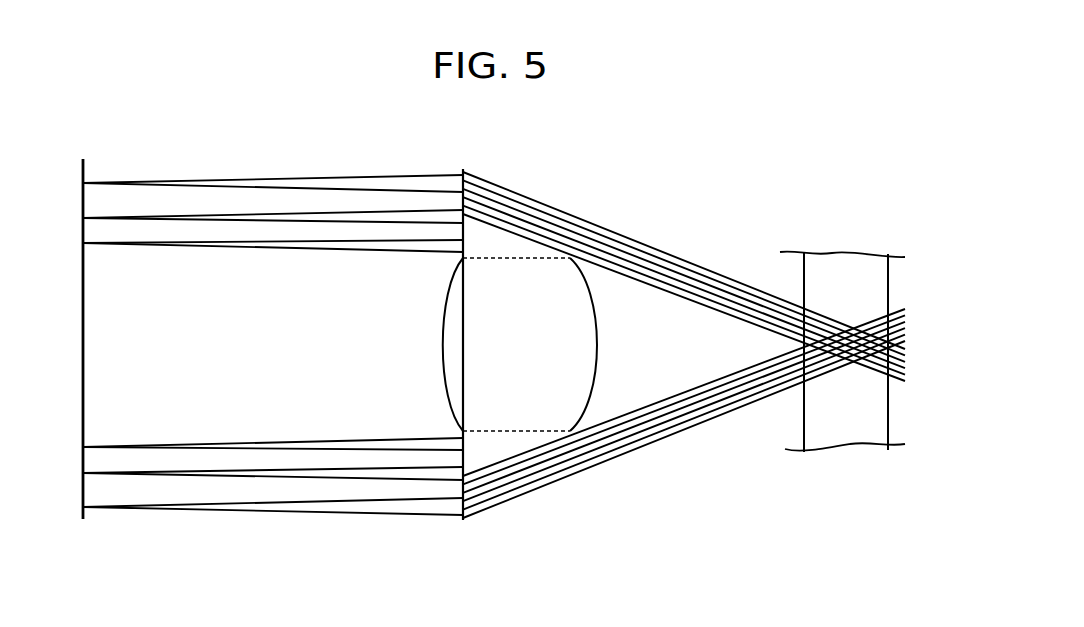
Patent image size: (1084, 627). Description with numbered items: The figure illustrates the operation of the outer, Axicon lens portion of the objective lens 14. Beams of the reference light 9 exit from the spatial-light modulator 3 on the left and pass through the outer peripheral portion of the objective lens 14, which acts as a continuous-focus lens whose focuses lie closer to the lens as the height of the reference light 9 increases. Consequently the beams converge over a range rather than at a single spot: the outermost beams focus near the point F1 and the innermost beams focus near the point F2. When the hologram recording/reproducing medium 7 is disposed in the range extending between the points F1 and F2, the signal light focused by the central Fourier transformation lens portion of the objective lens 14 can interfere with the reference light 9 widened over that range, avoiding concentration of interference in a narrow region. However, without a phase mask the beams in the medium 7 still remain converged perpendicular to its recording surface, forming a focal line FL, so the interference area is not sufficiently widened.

The spatial-light modulator 3 is at (84, 333).
The reference light 9 is at (258, 243).
The objective lens 14 is at (443, 344).
The hologram recording/reproducing medium 7 is at (848, 268).
The point near the focus of the outermost beams F1 is at (893, 346).
The point near the focus of the innermost beams F2 is at (803, 343).
The focal line FL is at (851, 353).